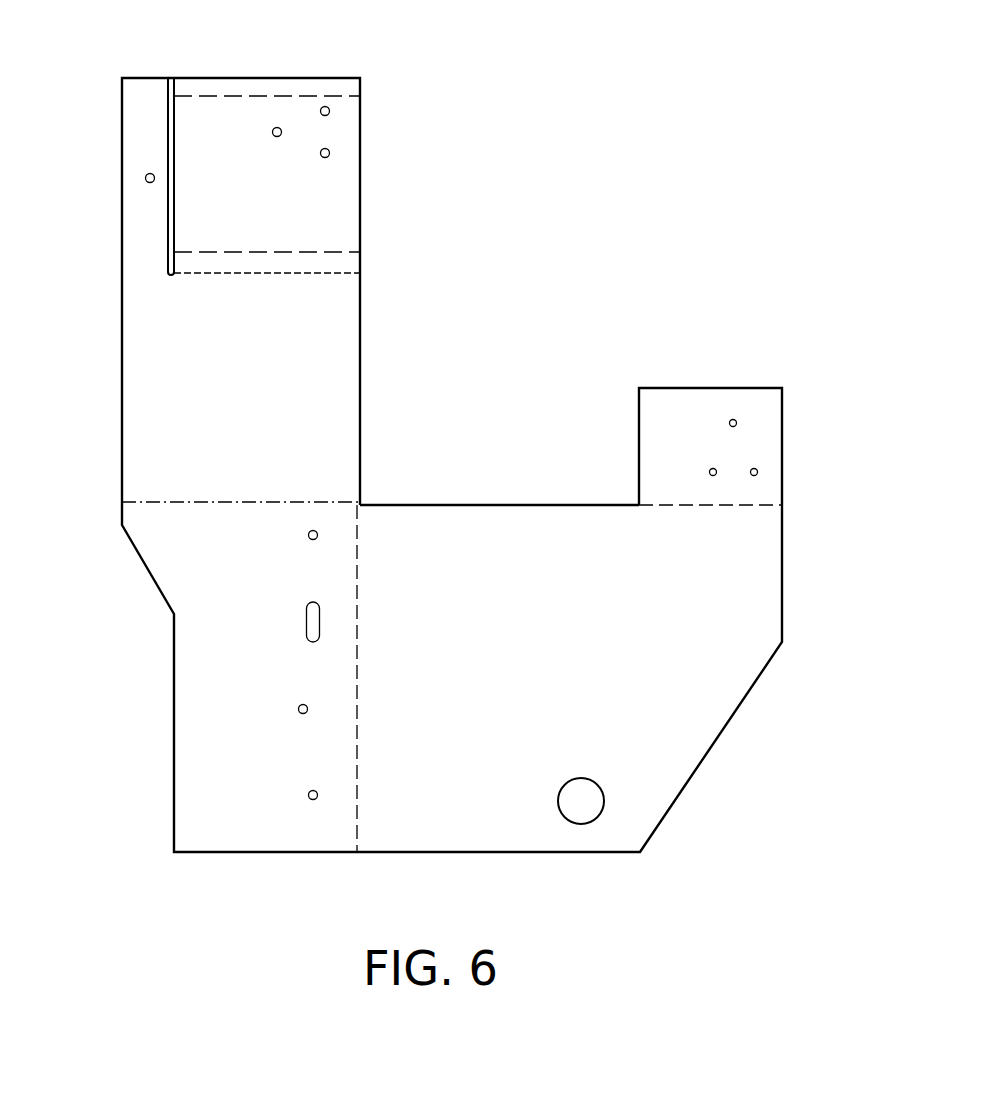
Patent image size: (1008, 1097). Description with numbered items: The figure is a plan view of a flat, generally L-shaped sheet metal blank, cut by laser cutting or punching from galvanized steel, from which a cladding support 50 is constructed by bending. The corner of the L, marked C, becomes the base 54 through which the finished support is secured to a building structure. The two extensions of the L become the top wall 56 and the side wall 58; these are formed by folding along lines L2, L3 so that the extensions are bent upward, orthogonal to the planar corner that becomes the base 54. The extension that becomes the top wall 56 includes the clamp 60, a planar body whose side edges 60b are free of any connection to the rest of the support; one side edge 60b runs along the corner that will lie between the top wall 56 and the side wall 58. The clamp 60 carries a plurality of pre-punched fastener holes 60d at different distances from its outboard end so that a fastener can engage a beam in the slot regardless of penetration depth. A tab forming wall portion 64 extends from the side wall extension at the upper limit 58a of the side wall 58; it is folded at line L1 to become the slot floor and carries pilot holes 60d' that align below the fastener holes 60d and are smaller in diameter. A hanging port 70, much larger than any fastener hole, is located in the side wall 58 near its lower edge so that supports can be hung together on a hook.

The cladding support 50 is at (645, 193).
The base 54 is at (217, 668).
The top wall 56 is at (190, 380).
The side wall 58 is at (668, 691).
The upper limit of side wall 58a is at (540, 505).
The clamp 60 is at (325, 202).
The side edge of clamp 60b is at (175, 145).
The fastener holes 60d is at (387, 103).
The pre-punched fastener holes 60d' is at (816, 447).
The wall portion 64 is at (689, 417).
The hanging port 70 is at (585, 810).
The fold line L1 is at (748, 505).
The fold line L2 is at (152, 502).
The fold line L3 is at (357, 793).